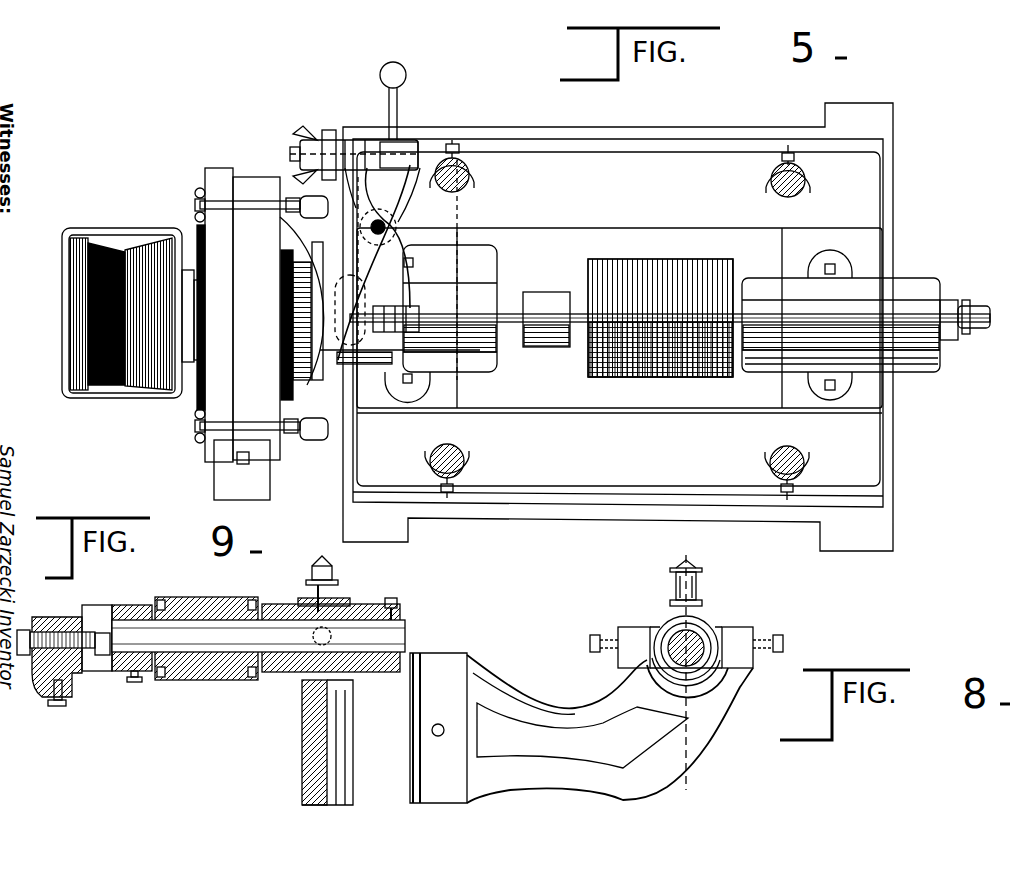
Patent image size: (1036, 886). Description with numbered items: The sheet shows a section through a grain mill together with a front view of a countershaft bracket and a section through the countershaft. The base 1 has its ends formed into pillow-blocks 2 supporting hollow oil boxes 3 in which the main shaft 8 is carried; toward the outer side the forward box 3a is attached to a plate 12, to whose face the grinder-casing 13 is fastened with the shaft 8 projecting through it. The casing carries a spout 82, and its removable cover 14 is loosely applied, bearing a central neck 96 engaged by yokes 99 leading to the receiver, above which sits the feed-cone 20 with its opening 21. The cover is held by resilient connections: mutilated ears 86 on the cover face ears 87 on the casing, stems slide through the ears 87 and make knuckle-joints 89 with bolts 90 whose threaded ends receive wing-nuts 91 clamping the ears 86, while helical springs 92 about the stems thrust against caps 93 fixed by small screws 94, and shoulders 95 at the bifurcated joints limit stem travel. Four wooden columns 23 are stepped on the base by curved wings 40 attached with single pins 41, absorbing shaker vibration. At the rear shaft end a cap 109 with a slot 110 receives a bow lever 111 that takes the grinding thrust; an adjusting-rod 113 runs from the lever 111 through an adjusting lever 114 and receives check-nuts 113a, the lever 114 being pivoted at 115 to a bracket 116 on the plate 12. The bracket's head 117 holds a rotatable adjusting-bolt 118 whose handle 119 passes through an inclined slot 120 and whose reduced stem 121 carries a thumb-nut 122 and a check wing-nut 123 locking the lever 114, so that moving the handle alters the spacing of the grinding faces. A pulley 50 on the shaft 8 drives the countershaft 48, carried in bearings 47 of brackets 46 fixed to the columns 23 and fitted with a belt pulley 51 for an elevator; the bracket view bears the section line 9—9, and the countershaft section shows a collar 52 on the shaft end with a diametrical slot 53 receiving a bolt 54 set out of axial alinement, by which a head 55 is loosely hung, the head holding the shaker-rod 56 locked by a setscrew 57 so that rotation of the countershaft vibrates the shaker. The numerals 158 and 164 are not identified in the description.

In FIG. 5, the base 1 is at (866, 478).
In FIG. 5, the pillow-blocks 2 is at (385, 414).
In FIG. 5, the bearings or boxes 3 is at (470, 366).
In FIG. 5, the forward box 3a is at (450, 372).
In FIG. 5, the shaft 8 is at (575, 348).
In FIG. 5, the section line 9 is at (684, 670).
In FIG. 5, the plate 12 is at (330, 400).
In FIG. 5, the grinder-casing 13 is at (256, 318).
In FIG. 5, the removable cover 14 is at (215, 180).
In FIG. 5, the feed-cone 20 is at (90, 310).
In FIG. 5, the opening 21 is at (95, 348).
In FIG. 5, the columns 23 is at (472, 180).
In FIG. 5, the curved wings 40 is at (468, 165).
In FIG. 5, the pins 41 is at (458, 142).
In FIG. 9, the brackets 46 is at (310, 752).
In FIG. 8, the brackets 46 is at (525, 700).
In FIG. 9, the bearings 47 is at (340, 604).
In FIG. 8, the bearings 47 is at (662, 622).
In FIG. 9, the countershaft 48 is at (400, 622).
In FIG. 8, the countershaft 48 is at (705, 636).
In FIG. 5, the pulley 50 is at (543, 300).
In FIG. 9, the belt pulley 51 is at (215, 682).
In FIG. 9, the collar 52 is at (132, 685).
In FIG. 9, the slot 53 is at (95, 605).
In FIG. 9, the bolt 54 is at (42, 690).
In FIG. 9, the head 55 is at (66, 694).
In FIG. 9, the shaker-rod 56 is at (70, 712).
In FIG. 9, the setscrew 57 is at (52, 700).
In FIG. 5, the spout 82 is at (255, 500).
In FIG. 5, the mutilated ears 86 is at (208, 205).
In FIG. 5, the ears 87 is at (295, 500).
In FIG. 5, the joints 89 is at (265, 212).
In FIG. 5, the bolts 90 is at (235, 212).
In FIG. 5, the wing-nuts 91 is at (190, 200).
In FIG. 5, the helical springs 92 is at (292, 200).
In FIG. 5, the caps 93 is at (292, 380).
In FIG. 5, the small screws 94 is at (322, 478).
In FIG. 5, the shoulders 95 is at (305, 212).
In FIG. 5, the neck 96 is at (185, 290).
In FIG. 5, the yokes 99 is at (190, 370).
In FIG. 5, the cap 109 is at (960, 340).
In FIG. 5, the slot 110 is at (985, 316).
In FIG. 5, the bow lever 111 is at (970, 305).
In FIG. 5, the adjusting-rod 113 is at (832, 326).
In FIG. 5, the check-nuts 113a is at (395, 336).
In FIG. 5, the adjusting lever 114 is at (440, 282).
In FIG. 5, the pivot 115 is at (388, 224).
In FIG. 5, the bracket 116 is at (420, 280).
In FIG. 5, the head 117 is at (410, 165).
In FIG. 5, the adjusting-bolt 118 is at (418, 160).
In FIG. 5, the handle 119 is at (380, 78).
In FIG. 5, the inclined slot 120 is at (388, 142).
In FIG. 5, the reduced stem 121 is at (300, 150).
In FIG. 5, the thumb-nut 122 is at (328, 130).
In FIG. 5, the wing-nut 123 is at (300, 133).
In FIG. 5, the rotor 158 is at (676, 266).
In FIG. 5, the rotor slots 164 is at (612, 268).